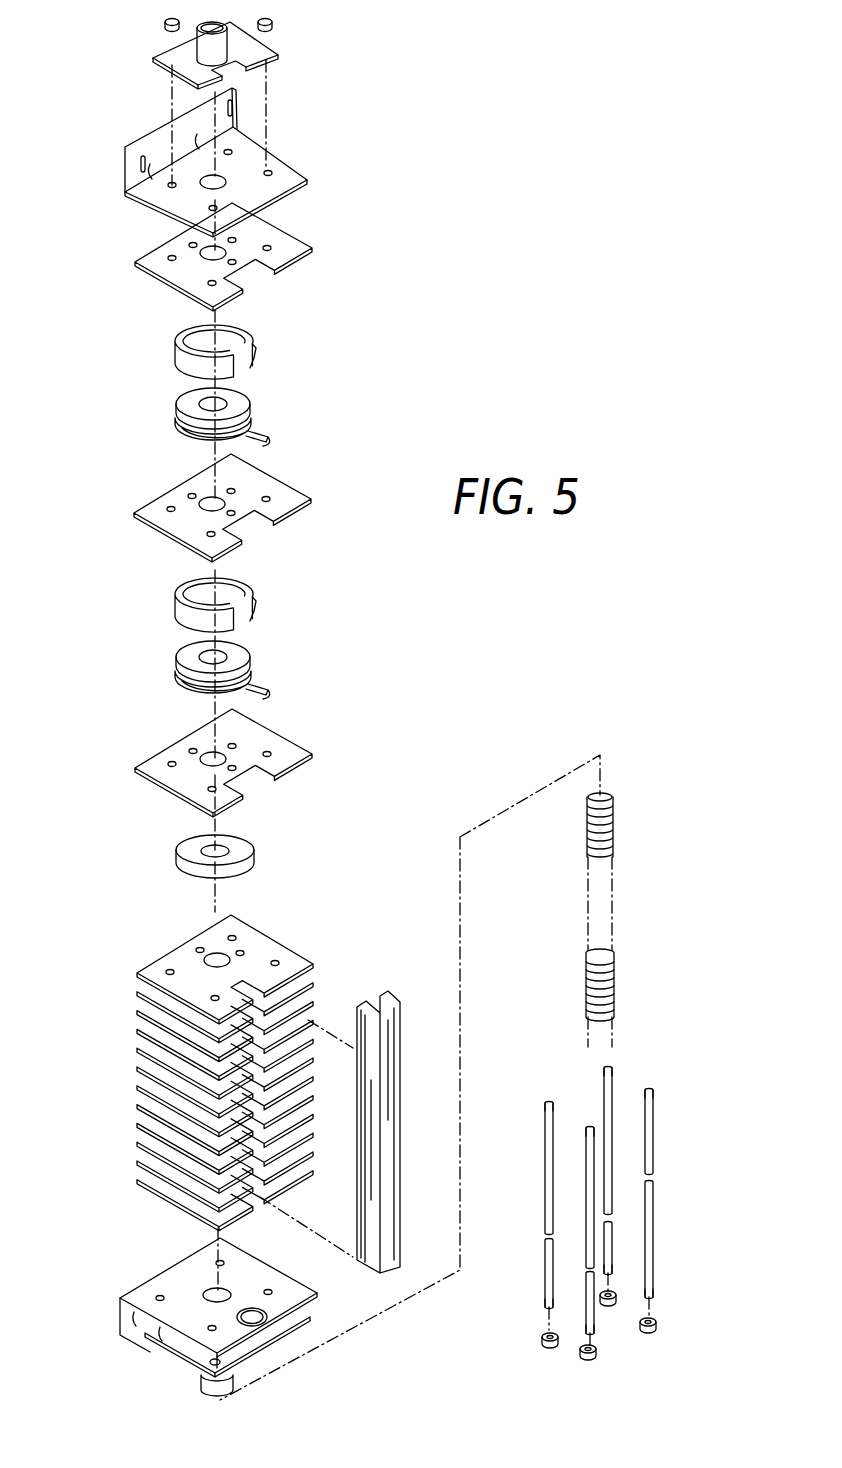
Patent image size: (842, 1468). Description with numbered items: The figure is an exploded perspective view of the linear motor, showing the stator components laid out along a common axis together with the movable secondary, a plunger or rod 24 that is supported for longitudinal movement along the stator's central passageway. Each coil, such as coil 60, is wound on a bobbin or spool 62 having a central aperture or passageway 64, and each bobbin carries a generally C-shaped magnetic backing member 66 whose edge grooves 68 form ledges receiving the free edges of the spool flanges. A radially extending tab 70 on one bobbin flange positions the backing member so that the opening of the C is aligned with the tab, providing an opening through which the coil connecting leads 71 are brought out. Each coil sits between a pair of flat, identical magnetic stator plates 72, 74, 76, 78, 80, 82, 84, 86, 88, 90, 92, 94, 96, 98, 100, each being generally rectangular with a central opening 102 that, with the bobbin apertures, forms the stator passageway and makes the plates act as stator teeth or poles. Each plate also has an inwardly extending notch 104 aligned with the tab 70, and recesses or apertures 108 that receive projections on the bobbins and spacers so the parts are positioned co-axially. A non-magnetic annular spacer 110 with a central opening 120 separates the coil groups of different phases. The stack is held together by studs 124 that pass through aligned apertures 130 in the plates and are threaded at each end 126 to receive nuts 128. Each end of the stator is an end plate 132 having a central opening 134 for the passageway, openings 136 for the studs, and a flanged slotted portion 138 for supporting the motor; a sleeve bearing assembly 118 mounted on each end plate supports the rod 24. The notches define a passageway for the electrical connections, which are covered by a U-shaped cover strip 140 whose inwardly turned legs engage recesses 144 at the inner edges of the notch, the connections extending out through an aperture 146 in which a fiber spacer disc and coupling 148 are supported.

The plunger or rod 24 is at (602, 915).
The coil 60 is at (194, 437).
The bobbin or spool 62 is at (178, 402).
The central aperture or passageway 64 is at (226, 406).
The C-shaped magnetic backing member 66 is at (180, 356).
The edge grooves 68 is at (251, 364).
The radially extending tab 70 is at (255, 433).
The coil connecting leads 71 is at (264, 446).
The stator plate 72 is at (294, 252).
The stator plate 74 is at (303, 498).
The stator plate 76 is at (298, 755).
The stator plate 78 is at (235, 925).
The stator plate 80 is at (136, 991).
The stator plate 82 is at (136, 1010).
The stator plate 84 is at (136, 1029).
The stator plate 86 is at (136, 1048).
The stator plate 88 is at (136, 1067).
The stator plate 90 is at (136, 1086).
The stator plate 92 is at (137, 1105).
The stator plate 94 is at (137, 1124).
The stator plate 96 is at (137, 1143).
The stator plate 98 is at (137, 1162).
The stator plate 100 is at (138, 1181).
The central opening 102 is at (223, 250).
The notch 104 is at (250, 278).
The recesses or apertures 108 is at (193, 258).
The annular spacer 110 is at (246, 852).
The sleeve bearing assembly 118 is at (172, 46).
The central opening 120 is at (204, 848).
The studs 124 is at (587, 1178).
The threaded ends 126 is at (570, 1065).
The nuts 128 is at (273, 24).
The apertures 130 is at (208, 283).
The end plate 132 is at (286, 173).
The central openings 134 is at (222, 178).
The openings 136 is at (209, 208).
The flanged slotted portion 138 is at (152, 137).
The cover strip 140 is at (390, 1152).
The recesses 144 is at (262, 266).
The aperture 146 is at (308, 1295).
The fiber spacer disc and coupling 148 is at (293, 1340).